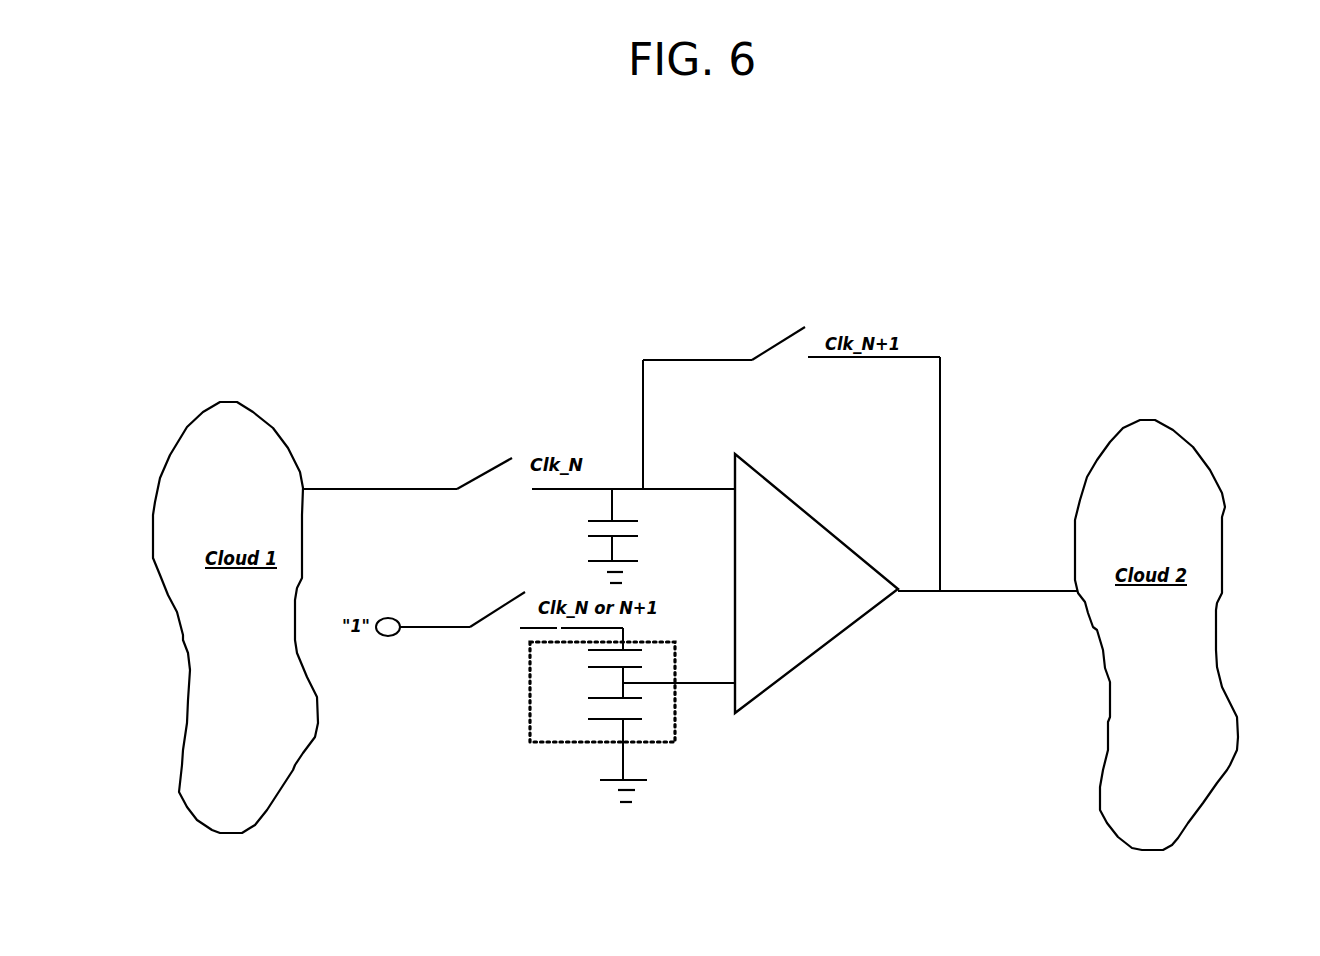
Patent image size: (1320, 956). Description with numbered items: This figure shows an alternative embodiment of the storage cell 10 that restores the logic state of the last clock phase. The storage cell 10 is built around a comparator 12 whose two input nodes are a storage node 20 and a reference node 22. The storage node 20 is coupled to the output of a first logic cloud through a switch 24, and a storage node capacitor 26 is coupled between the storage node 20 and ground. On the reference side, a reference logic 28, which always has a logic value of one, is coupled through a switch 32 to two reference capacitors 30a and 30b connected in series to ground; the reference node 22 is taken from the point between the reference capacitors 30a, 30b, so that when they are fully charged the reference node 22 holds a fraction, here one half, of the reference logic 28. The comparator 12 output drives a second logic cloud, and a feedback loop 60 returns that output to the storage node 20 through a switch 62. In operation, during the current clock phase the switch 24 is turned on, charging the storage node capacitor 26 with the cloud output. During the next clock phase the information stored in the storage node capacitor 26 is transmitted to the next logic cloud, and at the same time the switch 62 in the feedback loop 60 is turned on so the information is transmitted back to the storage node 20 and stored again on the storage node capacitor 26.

The storage cell 10 is at (803, 286).
The comparator 12 is at (771, 587).
The storage node 20 is at (698, 486).
The reference node 22 is at (707, 682).
The switch 24 is at (477, 472).
The storage node capacitor 26 is at (551, 540).
The reference logic 28 is at (385, 633).
The reference capacitor 30a is at (546, 667).
The reference capacitor 30b is at (547, 719).
The switch 32 is at (479, 606).
The feedback loop 60 is at (920, 356).
The switch 62 is at (764, 343).